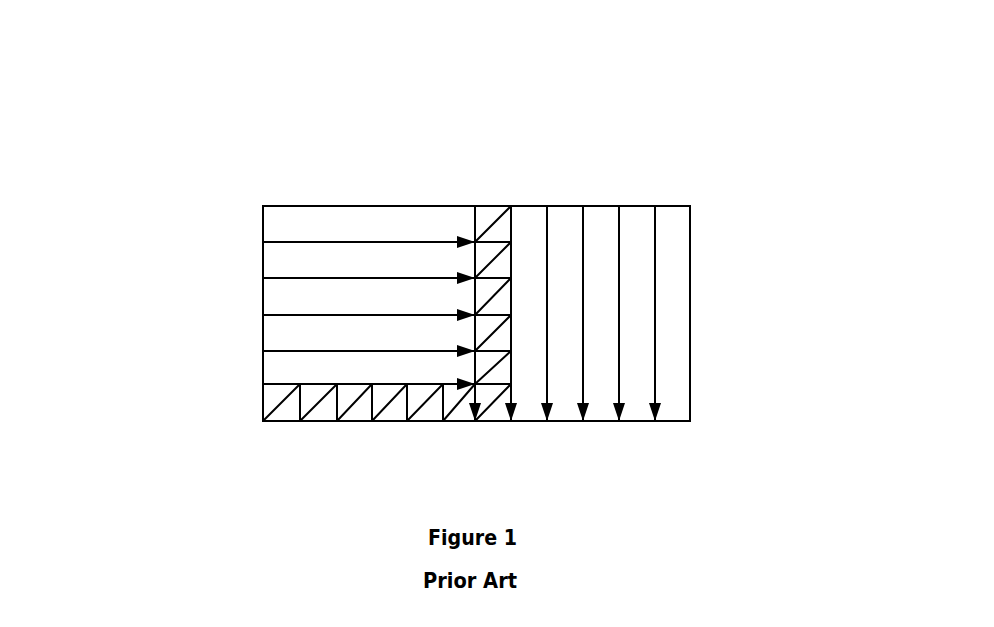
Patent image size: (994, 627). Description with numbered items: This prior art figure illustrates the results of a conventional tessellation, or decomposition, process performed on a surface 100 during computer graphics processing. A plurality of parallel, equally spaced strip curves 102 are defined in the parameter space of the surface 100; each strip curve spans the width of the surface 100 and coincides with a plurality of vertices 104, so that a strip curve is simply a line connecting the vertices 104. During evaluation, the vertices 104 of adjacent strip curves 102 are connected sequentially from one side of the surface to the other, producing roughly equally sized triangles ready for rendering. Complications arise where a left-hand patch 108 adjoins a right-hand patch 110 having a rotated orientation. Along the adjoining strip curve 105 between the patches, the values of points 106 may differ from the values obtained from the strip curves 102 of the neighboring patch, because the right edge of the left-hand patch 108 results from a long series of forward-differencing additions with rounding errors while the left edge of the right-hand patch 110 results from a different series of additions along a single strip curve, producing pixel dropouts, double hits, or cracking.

The surface 100 is at (263, 206).
The strip curves 102 is at (365, 242).
The vertices 104 is at (374, 423).
The adjoining strip curve 105 is at (474, 382).
The points 106 is at (489, 390).
The left-hand patch 108 is at (261, 315).
The right-hand patch 110 is at (691, 275).